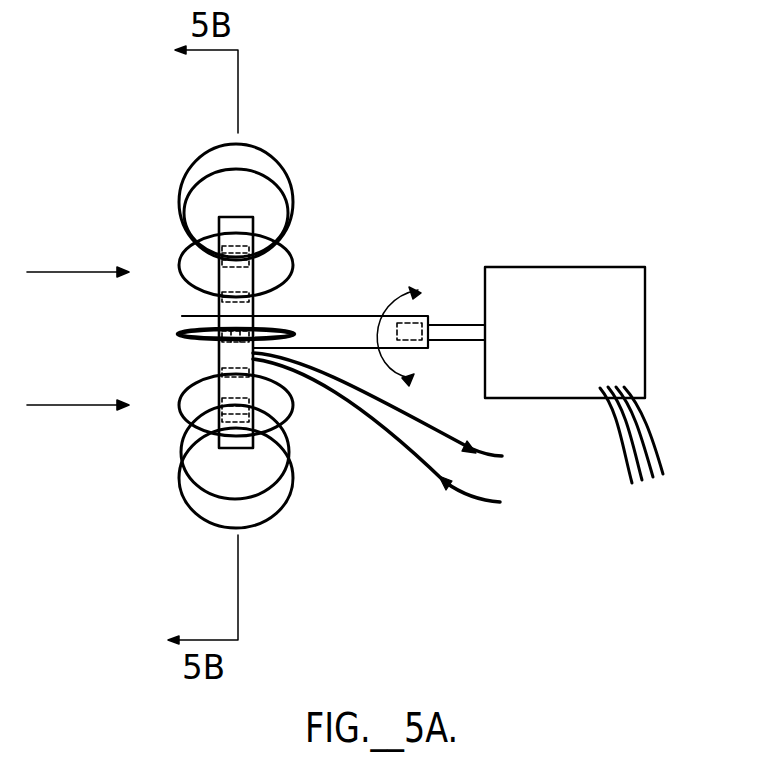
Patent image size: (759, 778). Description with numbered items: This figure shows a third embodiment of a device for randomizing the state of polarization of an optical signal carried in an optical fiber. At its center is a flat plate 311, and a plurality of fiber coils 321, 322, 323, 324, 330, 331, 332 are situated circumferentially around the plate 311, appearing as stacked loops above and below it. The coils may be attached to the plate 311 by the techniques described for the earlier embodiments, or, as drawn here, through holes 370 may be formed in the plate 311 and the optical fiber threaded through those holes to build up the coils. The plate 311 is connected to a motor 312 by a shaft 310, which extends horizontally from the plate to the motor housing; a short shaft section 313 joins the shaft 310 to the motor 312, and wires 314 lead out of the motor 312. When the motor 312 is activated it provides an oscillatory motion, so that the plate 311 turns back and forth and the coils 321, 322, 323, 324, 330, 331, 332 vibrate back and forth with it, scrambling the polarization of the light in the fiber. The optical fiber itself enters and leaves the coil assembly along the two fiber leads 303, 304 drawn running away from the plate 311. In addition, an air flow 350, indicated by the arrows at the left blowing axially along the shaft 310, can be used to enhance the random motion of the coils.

The return fluid line 303 is at (499, 501).
The supply fluid line 304 is at (502, 456).
The shaft 310 is at (344, 348).
The plate 311 is at (182, 316).
The motor 312 is at (576, 267).
The drive shaft 313 is at (438, 320).
The electrical wires 314 is at (620, 413).
The fiber coil 321 is at (190, 337).
The fiber coil 322 is at (290, 243).
The fiber coil 323 is at (248, 170).
The fiber coil 324 is at (217, 143).
The fiber coil 330 is at (225, 528).
The fiber coil 331 is at (193, 485).
The fiber coil 332 is at (185, 410).
The air flow 350 is at (88, 218).
The through holes 370 is at (290, 293).